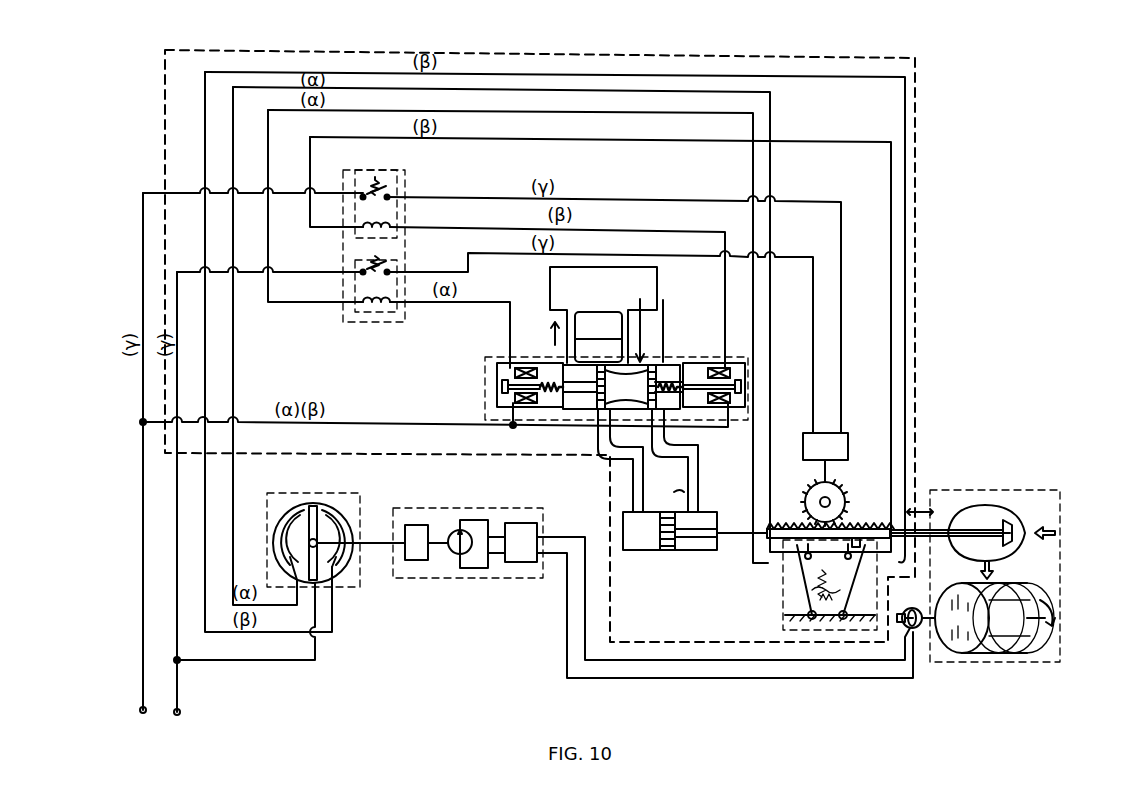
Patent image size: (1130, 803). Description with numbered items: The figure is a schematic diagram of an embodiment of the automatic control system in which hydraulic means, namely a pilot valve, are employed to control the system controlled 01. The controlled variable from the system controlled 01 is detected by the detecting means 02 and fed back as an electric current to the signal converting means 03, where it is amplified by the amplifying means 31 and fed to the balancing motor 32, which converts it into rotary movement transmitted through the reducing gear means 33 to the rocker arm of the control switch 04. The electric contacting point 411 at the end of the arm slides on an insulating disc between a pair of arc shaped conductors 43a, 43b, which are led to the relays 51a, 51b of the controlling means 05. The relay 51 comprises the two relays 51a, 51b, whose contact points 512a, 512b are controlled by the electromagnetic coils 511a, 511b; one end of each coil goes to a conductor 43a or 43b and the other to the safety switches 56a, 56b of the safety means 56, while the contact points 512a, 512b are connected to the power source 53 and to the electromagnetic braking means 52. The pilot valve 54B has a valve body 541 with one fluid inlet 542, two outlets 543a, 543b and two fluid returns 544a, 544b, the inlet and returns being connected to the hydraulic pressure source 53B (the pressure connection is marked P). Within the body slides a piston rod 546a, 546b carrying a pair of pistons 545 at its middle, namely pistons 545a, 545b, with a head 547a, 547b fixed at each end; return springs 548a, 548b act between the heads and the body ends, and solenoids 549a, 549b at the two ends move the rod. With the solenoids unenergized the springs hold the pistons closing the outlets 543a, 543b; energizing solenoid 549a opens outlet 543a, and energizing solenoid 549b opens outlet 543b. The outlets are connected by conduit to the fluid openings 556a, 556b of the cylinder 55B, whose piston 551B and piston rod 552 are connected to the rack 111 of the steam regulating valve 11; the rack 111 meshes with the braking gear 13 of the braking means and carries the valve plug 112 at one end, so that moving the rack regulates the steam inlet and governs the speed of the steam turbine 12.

The controlling means 05 is at (716, 58).
The power source 53 is at (162, 472).
The relay 51 is at (385, 173).
The relay 51a is at (385, 322).
The relay 51b is at (352, 177).
The electromagnetic coil 511a is at (361, 300).
The electromagnetic coil 511b is at (396, 222).
The contact point 512a is at (394, 260).
The contact point 512b is at (396, 189).
The hydraulic pressure source 53B is at (655, 279).
The valve body 541 is at (565, 408).
The fluid inlet 542 is at (630, 324).
The fluid outlet 543a is at (600, 409).
The fluid outlet 543b is at (676, 412).
The fluid return 544a is at (550, 355).
The fluid return 544b is at (640, 365).
The pistons 545 is at (648, 460).
The piston 545a is at (576, 355).
The piston 545b is at (658, 365).
The piston rod 546a is at (556, 408).
The piston rod 546b is at (710, 418).
The pilot valve 54B is at (488, 394).
The head 547a is at (501, 385).
The head 547b is at (741, 383).
The return spring 548a is at (514, 407).
The return spring 548b is at (730, 363).
The solenoid 549a is at (522, 372).
The solenoid 549b is at (741, 394).
The pressure port P is at (666, 314).
The cylinder 55B is at (640, 550).
The piston 551B is at (680, 550).
The piston rod 552 is at (736, 536).
The fluid opening 556a is at (630, 512).
The fluid opening 556b is at (704, 512).
The rack 111 is at (778, 524).
The electromagnetic braking means 52 is at (846, 432).
The braking gear 13 is at (840, 484).
The safety means 56 is at (822, 622).
The safety switch 56a is at (798, 596).
The safety switch 56b is at (864, 562).
The control switch 04 is at (346, 494).
The electric contacting point 411 is at (301, 504).
The arc shaped conductor 43a is at (276, 545).
The arc shaped conductor 43b is at (334, 576).
The signal converting means 03 is at (443, 507).
The reducing gear means 33 is at (414, 521).
The balancing motor 32 is at (458, 558).
The amplifying means 31 is at (520, 558).
The system controlled 01 is at (1026, 491).
The steam regulating valve 11 is at (974, 507).
The valve plug 112 is at (1018, 522).
The detecting means 02 is at (912, 628).
The steam turbine 12 is at (987, 656).